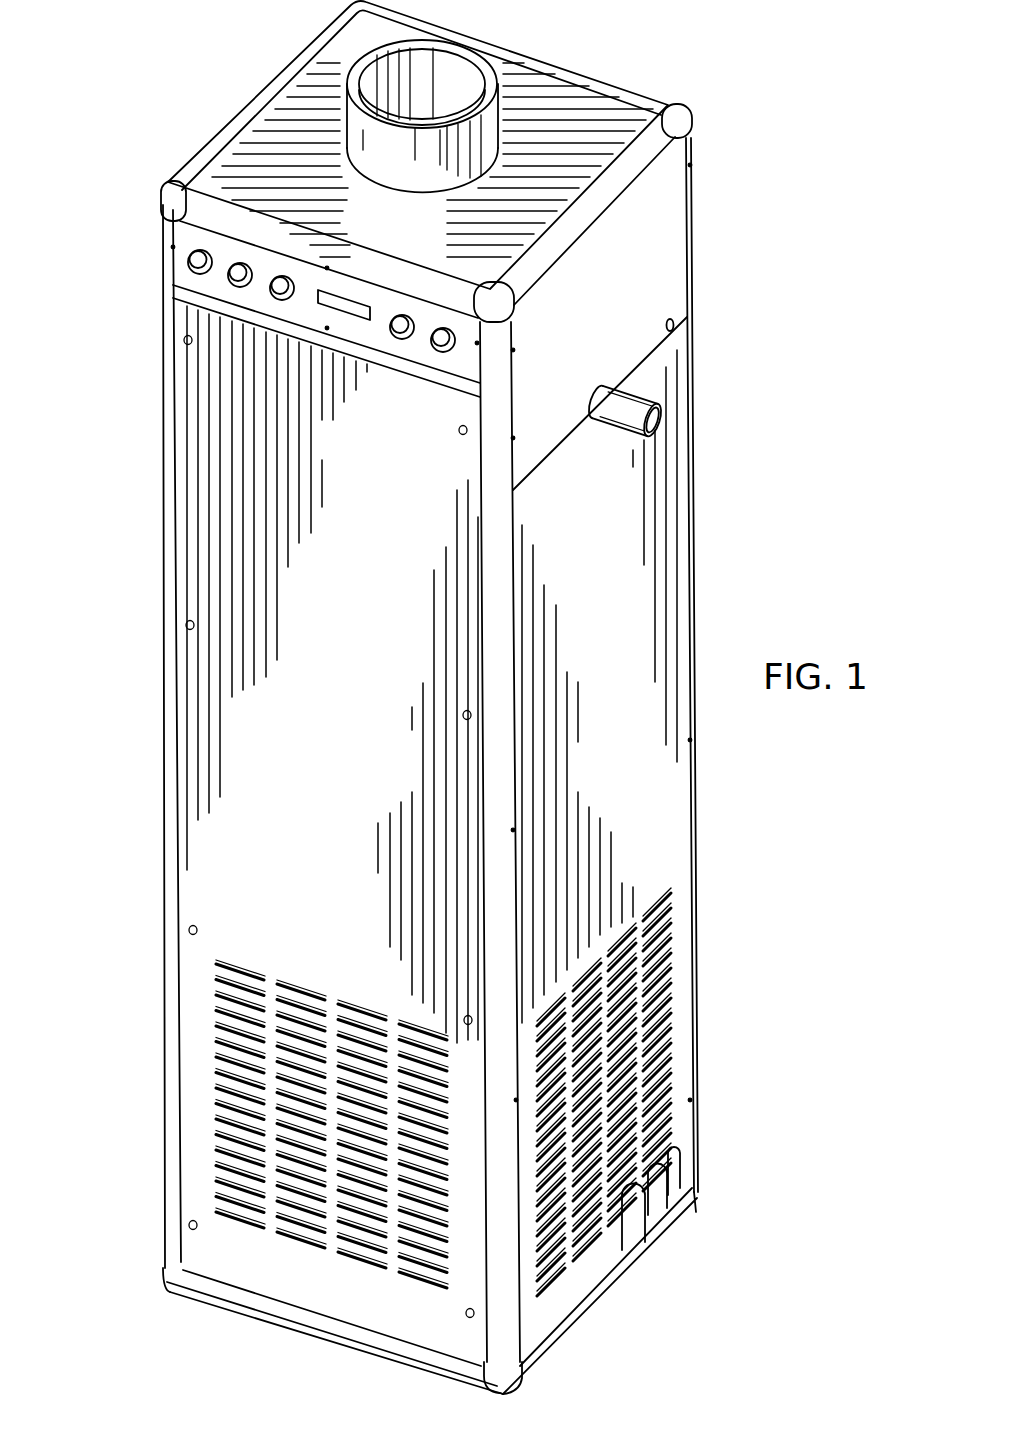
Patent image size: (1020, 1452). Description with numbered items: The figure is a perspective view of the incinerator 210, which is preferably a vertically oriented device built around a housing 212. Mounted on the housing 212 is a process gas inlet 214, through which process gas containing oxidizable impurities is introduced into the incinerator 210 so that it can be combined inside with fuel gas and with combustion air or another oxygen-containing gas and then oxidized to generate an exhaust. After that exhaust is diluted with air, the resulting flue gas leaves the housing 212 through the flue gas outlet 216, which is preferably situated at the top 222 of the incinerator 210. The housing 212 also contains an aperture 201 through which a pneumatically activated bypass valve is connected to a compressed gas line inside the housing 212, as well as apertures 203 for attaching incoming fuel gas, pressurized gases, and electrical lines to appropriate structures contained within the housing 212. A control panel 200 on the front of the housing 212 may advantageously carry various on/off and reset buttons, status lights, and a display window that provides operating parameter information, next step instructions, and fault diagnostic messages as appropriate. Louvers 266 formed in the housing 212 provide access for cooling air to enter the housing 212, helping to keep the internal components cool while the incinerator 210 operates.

The incinerator 210 is at (697, 190).
The top 222 is at (597, 112).
The flue gas outlet 216 is at (372, 56).
The control panel 200 is at (185, 282).
The housing 212 is at (200, 514).
The louvers 266 is at (750, 870).
The process gas inlet 214 is at (656, 420).
The aperture 201 is at (676, 327).
The apertures 203 is at (697, 1212).